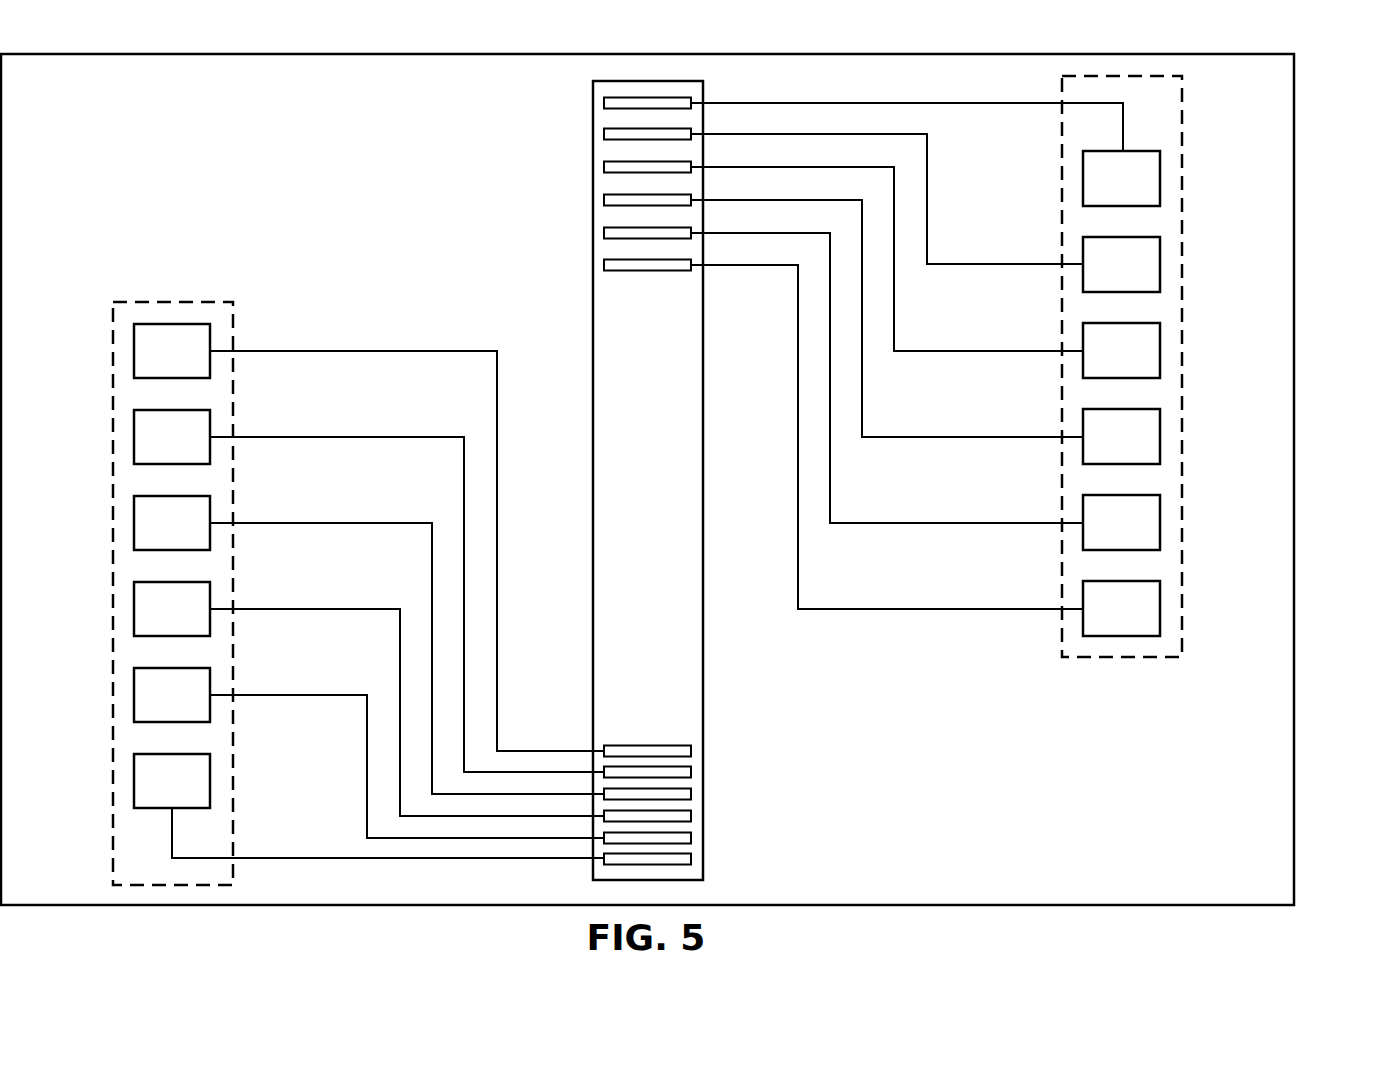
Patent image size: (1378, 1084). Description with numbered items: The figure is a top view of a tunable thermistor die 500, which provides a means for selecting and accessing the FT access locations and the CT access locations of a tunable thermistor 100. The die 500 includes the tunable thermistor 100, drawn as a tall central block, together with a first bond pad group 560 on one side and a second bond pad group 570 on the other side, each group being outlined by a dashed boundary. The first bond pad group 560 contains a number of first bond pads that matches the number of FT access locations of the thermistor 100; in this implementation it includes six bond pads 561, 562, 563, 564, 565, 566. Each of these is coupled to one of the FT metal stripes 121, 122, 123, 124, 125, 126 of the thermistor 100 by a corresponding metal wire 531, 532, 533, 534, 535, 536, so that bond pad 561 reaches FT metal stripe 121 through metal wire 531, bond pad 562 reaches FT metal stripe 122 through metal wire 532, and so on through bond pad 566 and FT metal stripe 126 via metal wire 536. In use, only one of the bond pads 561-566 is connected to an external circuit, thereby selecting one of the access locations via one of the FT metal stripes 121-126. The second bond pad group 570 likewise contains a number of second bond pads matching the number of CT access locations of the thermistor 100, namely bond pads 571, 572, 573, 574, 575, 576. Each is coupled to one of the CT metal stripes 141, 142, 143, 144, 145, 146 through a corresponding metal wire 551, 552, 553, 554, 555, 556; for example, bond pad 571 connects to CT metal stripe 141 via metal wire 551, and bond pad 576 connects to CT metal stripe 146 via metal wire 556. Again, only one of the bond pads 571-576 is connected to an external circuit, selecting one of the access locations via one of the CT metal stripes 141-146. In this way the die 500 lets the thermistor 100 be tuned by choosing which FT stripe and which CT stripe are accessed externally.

The tunable thermistor 100 is at (627, 497).
The FT metal stripe 121 is at (686, 758).
The FT metal stripe 122 is at (686, 780).
The FT metal stripe 123 is at (686, 801).
The FT metal stripe 124 is at (686, 823).
The FT metal stripe 125 is at (686, 845).
The FT metal stripe 126 is at (686, 866).
The CT metal stripe 141 is at (618, 260).
The CT metal stripe 142 is at (618, 228).
The CT metal stripe 143 is at (618, 195).
The CT metal stripe 144 is at (618, 162).
The CT metal stripe 145 is at (618, 129).
The CT metal stripe 146 is at (618, 98).
The tunable thermistor die 500 is at (1299, 361).
The metal wire 531 is at (300, 349).
The metal wire 532 is at (300, 435).
The metal wire 533 is at (300, 521).
The metal wire 534 is at (300, 607).
The metal wire 535 is at (300, 693).
The metal wire 536 is at (300, 856).
The metal wire 551 is at (992, 611).
The metal wire 552 is at (992, 525).
The metal wire 553 is at (992, 439).
The metal wire 554 is at (992, 353).
The metal wire 555 is at (992, 266).
The metal wire 556 is at (992, 105).
The first bond pad group 560 is at (145, 299).
The bond pad 561 is at (152, 367).
The bond pad 562 is at (152, 453).
The bond pad 563 is at (152, 539).
The bond pad 564 is at (152, 625).
The bond pad 565 is at (152, 711).
The bond pad 566 is at (152, 797).
The second bond pad group 570 is at (1152, 661).
The bond pad 571 is at (1101, 625).
The bond pad 572 is at (1101, 539).
The bond pad 573 is at (1101, 453).
The bond pad 574 is at (1101, 367).
The bond pad 575 is at (1101, 281).
The bond pad 576 is at (1101, 195).